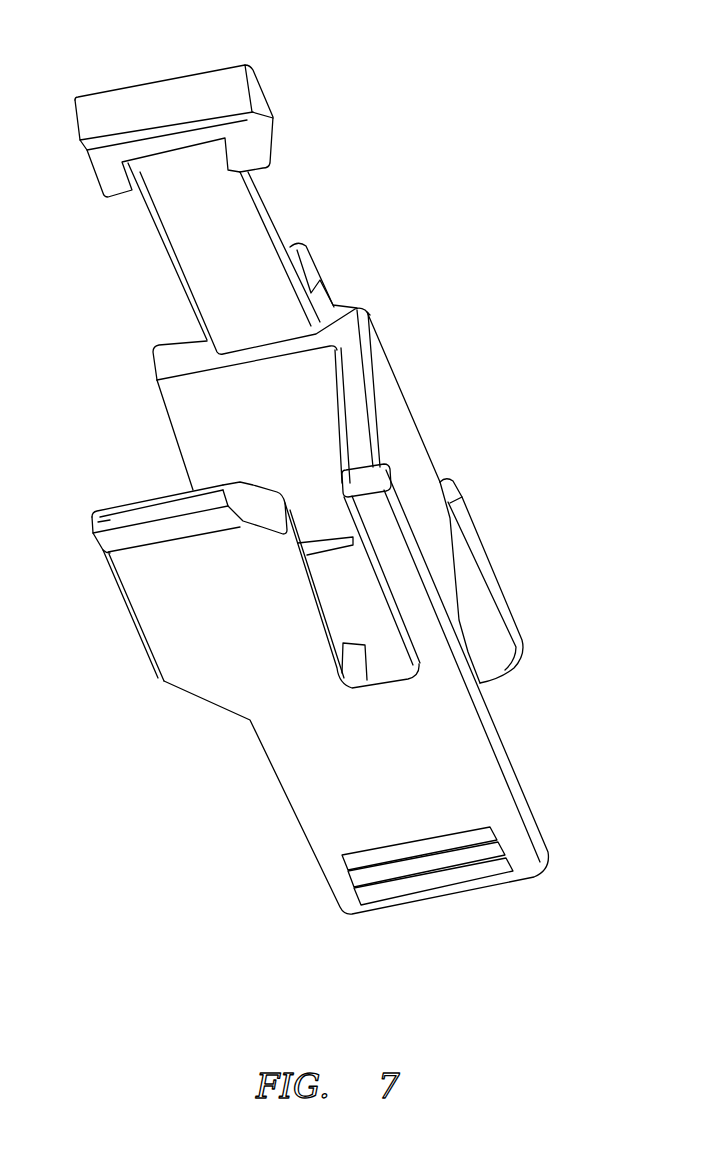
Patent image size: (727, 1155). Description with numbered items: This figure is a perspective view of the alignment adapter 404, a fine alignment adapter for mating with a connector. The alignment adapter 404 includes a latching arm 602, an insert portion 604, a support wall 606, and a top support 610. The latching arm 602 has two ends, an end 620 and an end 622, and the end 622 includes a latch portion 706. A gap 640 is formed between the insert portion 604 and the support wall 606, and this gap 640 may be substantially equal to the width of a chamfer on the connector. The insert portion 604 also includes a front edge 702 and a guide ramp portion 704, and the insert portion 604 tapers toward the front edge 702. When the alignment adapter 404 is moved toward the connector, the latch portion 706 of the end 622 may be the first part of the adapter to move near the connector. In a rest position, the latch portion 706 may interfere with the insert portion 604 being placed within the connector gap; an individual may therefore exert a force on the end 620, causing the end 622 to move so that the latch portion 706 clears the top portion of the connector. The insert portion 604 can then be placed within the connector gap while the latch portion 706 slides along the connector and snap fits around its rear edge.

The alignment adapter 404 is at (460, 176).
The latching arm 602 is at (309, 188).
The insert portion 604 is at (175, 580).
The support wall 606 is at (397, 433).
The top support 610 is at (270, 397).
The end 620 is at (475, 602).
The end 622 is at (137, 100).
The gap 640 is at (357, 598).
The front edge 702 is at (93, 532).
The guide ramp portion 704 is at (247, 500).
The latch portion 706 is at (243, 158).